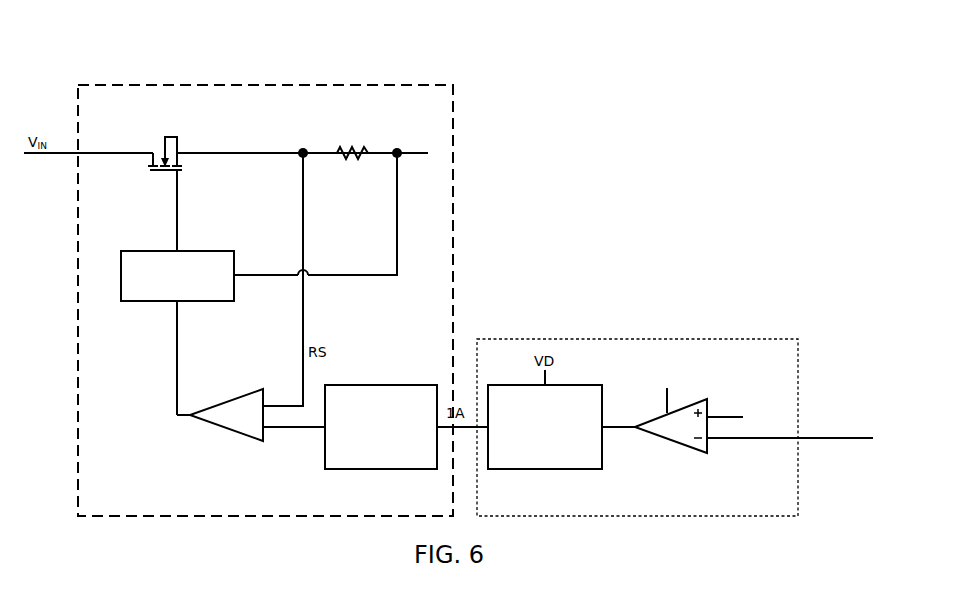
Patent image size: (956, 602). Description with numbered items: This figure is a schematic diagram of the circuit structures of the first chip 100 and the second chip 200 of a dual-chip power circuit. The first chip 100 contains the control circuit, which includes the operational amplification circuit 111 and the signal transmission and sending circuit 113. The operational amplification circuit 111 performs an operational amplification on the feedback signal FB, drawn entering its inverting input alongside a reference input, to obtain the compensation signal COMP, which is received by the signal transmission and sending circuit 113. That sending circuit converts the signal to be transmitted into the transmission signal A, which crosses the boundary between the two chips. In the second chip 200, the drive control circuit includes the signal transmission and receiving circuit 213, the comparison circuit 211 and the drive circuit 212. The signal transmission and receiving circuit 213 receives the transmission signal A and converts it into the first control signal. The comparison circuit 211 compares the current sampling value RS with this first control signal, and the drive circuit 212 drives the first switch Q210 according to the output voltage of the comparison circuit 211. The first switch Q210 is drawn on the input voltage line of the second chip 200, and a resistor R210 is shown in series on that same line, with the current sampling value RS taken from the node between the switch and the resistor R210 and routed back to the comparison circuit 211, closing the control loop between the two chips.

The second chip 200 is at (132, 84).
The first chip 100 is at (637, 333).
The first switch Q210 is at (137, 156).
The resistor R210 is at (350, 162).
The drive circuit 212 is at (177, 276).
The comparison circuit 211 is at (232, 437).
The signal transmission and receiving circuit 213 is at (381, 427).
The signal transmission and sending circuit 113 is at (545, 427).
The operational amplification circuit 111 is at (673, 450).